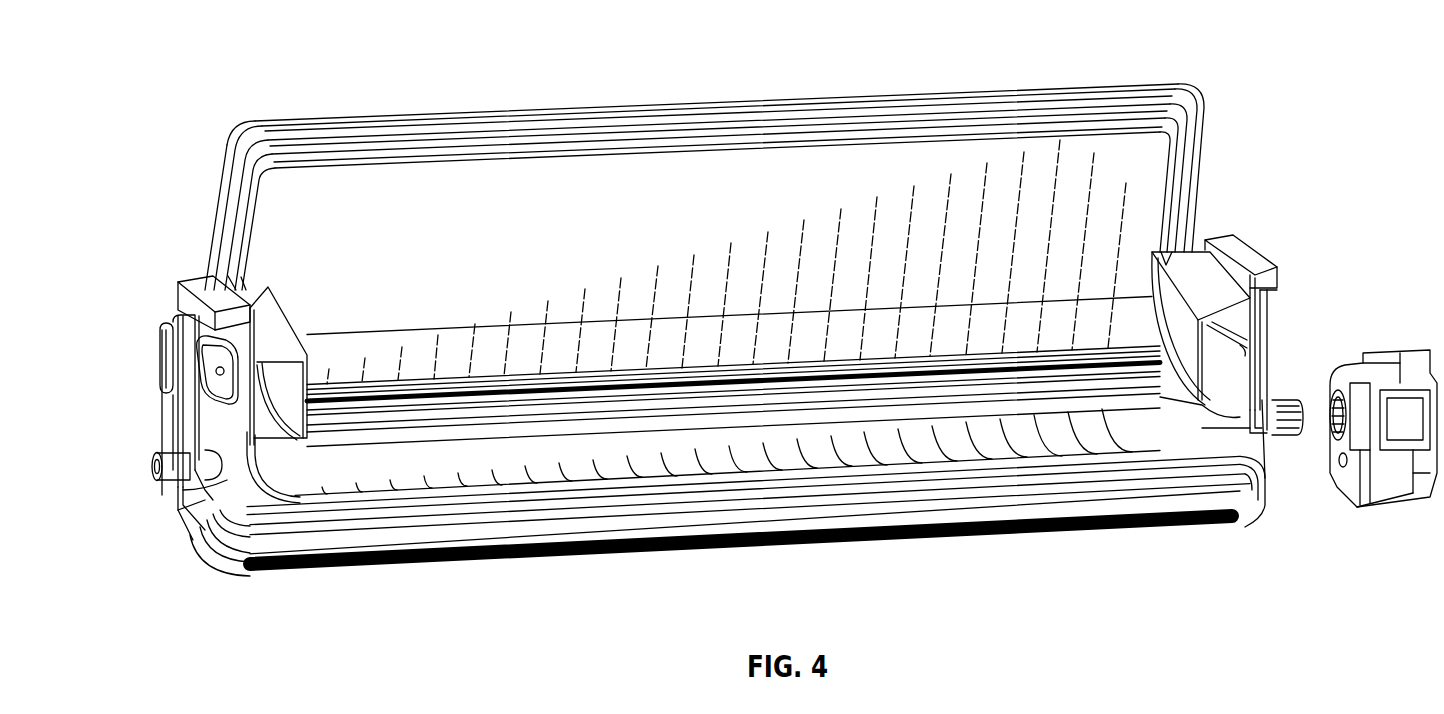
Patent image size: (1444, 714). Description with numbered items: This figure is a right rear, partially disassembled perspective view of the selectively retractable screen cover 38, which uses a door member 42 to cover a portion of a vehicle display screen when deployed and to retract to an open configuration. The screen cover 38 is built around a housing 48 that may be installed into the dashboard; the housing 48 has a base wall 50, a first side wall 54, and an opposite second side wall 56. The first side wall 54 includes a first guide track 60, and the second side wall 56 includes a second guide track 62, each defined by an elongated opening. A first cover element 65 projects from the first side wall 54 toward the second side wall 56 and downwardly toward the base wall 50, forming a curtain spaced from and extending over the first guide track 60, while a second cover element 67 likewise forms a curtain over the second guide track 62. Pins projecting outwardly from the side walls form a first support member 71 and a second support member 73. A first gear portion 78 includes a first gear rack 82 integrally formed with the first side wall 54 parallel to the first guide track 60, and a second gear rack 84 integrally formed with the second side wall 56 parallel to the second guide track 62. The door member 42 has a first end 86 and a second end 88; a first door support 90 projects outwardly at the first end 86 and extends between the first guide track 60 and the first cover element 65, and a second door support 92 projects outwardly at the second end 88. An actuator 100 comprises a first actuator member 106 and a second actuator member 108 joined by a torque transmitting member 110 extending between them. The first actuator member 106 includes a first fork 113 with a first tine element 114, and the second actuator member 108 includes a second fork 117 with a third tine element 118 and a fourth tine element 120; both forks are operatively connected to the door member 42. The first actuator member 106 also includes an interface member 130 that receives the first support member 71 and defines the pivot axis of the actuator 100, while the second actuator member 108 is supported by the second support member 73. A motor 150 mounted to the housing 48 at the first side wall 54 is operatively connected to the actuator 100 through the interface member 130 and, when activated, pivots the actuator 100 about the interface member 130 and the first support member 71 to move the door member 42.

The selectively retractable screen cover 38 is at (236, 112).
The door member 42 is at (405, 115).
The second end 88 is at (222, 170).
The first end 86 is at (1203, 120).
The second door support 92 is at (230, 272).
The first door support 90 is at (1165, 265).
The second gear rack 84 is at (185, 293).
The second cover element 67 is at (281, 331).
The second fork 117 is at (158, 316).
The fourth tine element 120 is at (180, 333).
The third tine element 118 is at (175, 358).
The second guide track 62 is at (205, 372).
The second side wall 56 is at (218, 428).
The second support member 73 is at (170, 460).
The second actuator member 108 is at (187, 497).
The housing 48 is at (257, 511).
The torque transmitting member 110 is at (440, 543).
The actuator 100 is at (1004, 541).
The base wall 50 is at (553, 472).
The first actuator member 106 is at (1268, 447).
The first cover element 65 is at (1192, 262).
The first side wall 54 is at (1222, 420).
The first guide track 60 is at (1247, 333).
The first gear portion 78 is at (1257, 246).
The first gear rack 82 is at (1280, 285).
The first tine element 114 is at (1265, 298).
The first fork 113 is at (1272, 330).
The first support member 71 is at (1290, 443).
The interface member 130 is at (1285, 402).
The motor 150 is at (1386, 514).